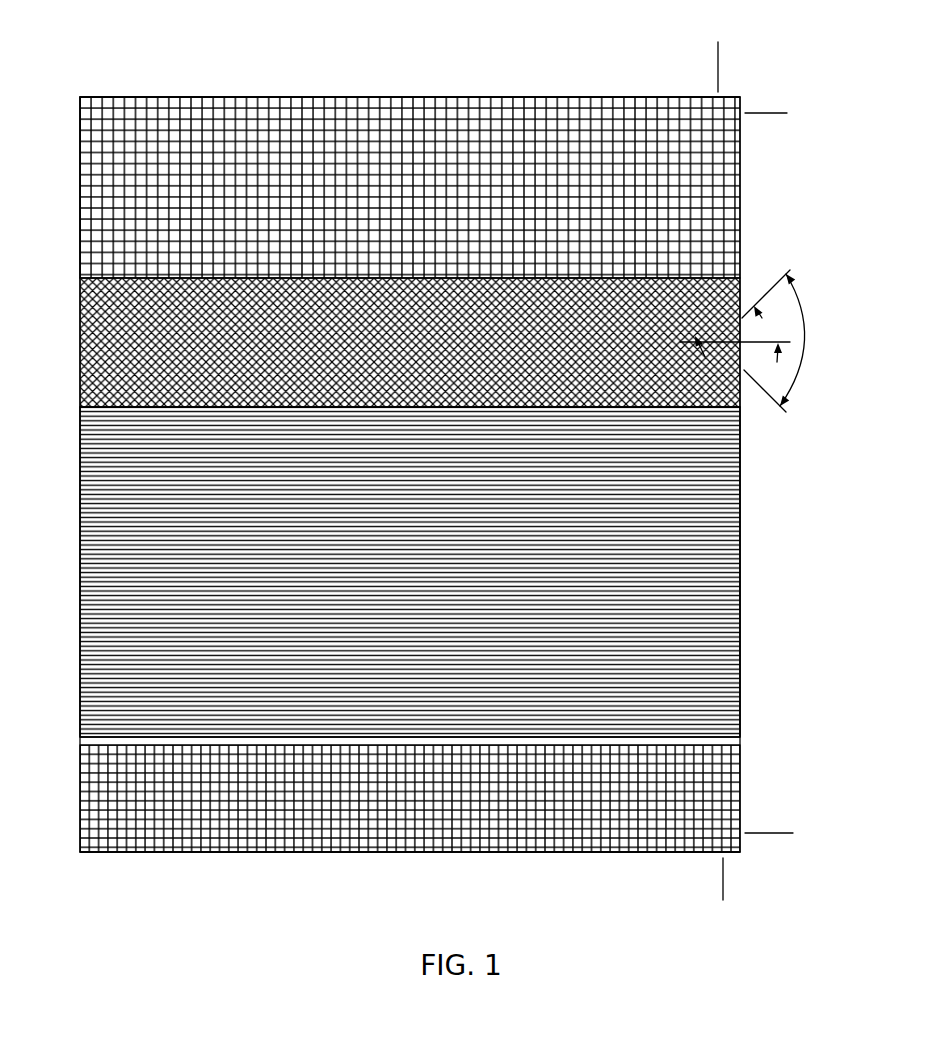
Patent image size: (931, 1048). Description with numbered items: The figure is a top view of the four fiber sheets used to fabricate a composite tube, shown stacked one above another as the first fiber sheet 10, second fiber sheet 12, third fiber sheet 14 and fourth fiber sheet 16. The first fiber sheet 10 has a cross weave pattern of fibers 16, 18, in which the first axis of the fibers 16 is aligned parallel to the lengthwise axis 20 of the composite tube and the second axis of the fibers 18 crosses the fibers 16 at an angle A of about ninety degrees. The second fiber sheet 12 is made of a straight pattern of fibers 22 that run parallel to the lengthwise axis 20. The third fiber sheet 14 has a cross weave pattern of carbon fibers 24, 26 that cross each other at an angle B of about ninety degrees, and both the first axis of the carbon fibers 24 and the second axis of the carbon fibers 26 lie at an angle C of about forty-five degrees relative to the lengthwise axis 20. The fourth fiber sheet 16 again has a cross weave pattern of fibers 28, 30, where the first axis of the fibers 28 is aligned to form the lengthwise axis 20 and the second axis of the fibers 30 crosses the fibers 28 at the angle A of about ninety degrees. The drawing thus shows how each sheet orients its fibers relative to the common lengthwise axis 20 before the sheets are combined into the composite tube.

The first fiber sheet 10 is at (187, 872).
The second fiber sheet 12 is at (61, 664).
The third fiber sheet 14 is at (70, 332).
The fourth fiber sheet 16 is at (291, 76).
The fibers 18 is at (78, 830).
The lengthwise axis 20 is at (680, 342).
The fibers 22 is at (88, 640).
The carbon fibers 24 is at (725, 333).
The carbon fibers 26 is at (723, 357).
The fibers 28 is at (177, 98).
The fibers 30 is at (82, 155).
The angle A is at (724, 47).
The angle B is at (795, 340).
The angle C is at (768, 333).